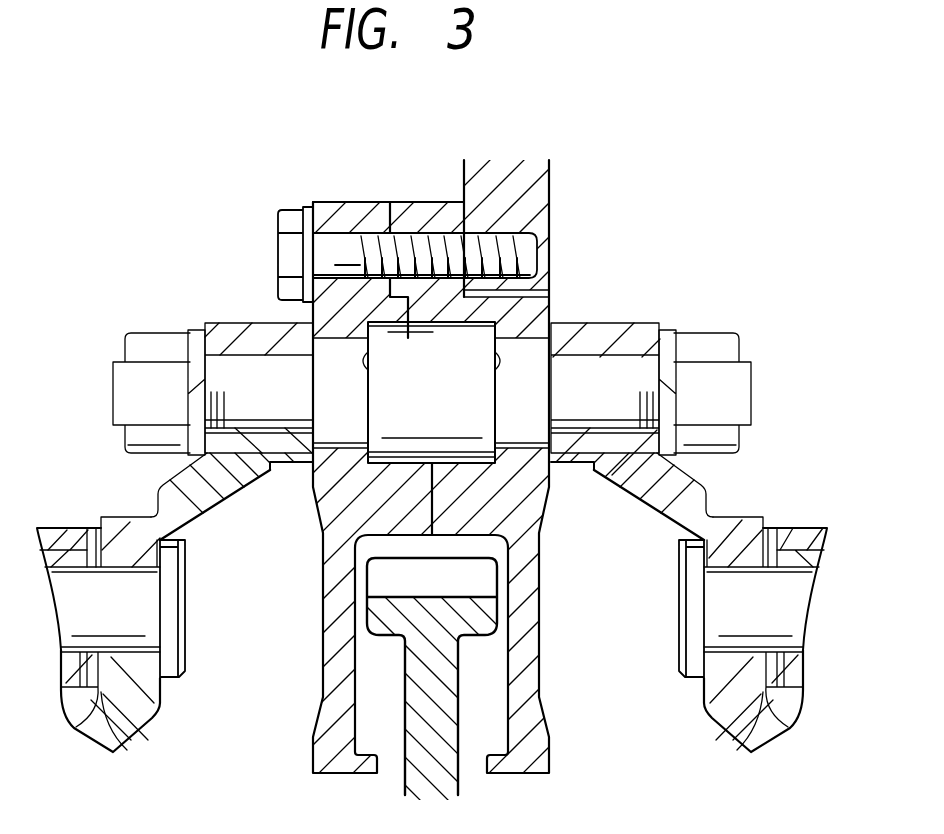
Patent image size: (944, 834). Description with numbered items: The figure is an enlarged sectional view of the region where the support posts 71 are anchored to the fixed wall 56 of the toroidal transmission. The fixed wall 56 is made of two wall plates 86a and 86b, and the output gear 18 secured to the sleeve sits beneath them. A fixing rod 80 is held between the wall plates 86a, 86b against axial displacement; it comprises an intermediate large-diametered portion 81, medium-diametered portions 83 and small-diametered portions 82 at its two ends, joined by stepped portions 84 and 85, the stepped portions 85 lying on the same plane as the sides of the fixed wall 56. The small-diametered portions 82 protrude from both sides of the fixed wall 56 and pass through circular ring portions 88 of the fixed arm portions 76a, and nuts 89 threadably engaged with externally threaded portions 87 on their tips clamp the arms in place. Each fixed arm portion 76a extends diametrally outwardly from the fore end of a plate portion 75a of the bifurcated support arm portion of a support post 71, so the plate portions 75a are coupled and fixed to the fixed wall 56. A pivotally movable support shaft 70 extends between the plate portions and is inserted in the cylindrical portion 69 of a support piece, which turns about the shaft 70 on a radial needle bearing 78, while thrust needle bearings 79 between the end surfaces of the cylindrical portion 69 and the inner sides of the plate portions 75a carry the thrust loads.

The output gear 18 is at (457, 703).
The fixed wall 56 is at (320, 734).
The cylindrical portion 69 is at (53, 537).
The pivotally movable support shaft 70 is at (150, 623).
The support post 71 is at (150, 712).
The plate portion 75a is at (148, 555).
The fixed arm portion 76a is at (193, 518).
The radial needle bearing 78 is at (72, 547).
The thrust needle bearing 79 is at (126, 751).
The fixing rod 80 is at (548, 346).
The intermediate large-diametered portion 81 is at (447, 333).
The small-diametered portion 82 is at (252, 370).
The medium-diametered portion 83 is at (343, 352).
The stepped portion 84 is at (495, 370).
The stepped portion 85 is at (273, 337).
The wall plate 86a is at (330, 633).
The wall plate 86b is at (527, 603).
The externally threaded portion 87 is at (201, 335).
The circular ring portion 88 is at (290, 453).
The nut 89 is at (128, 347).